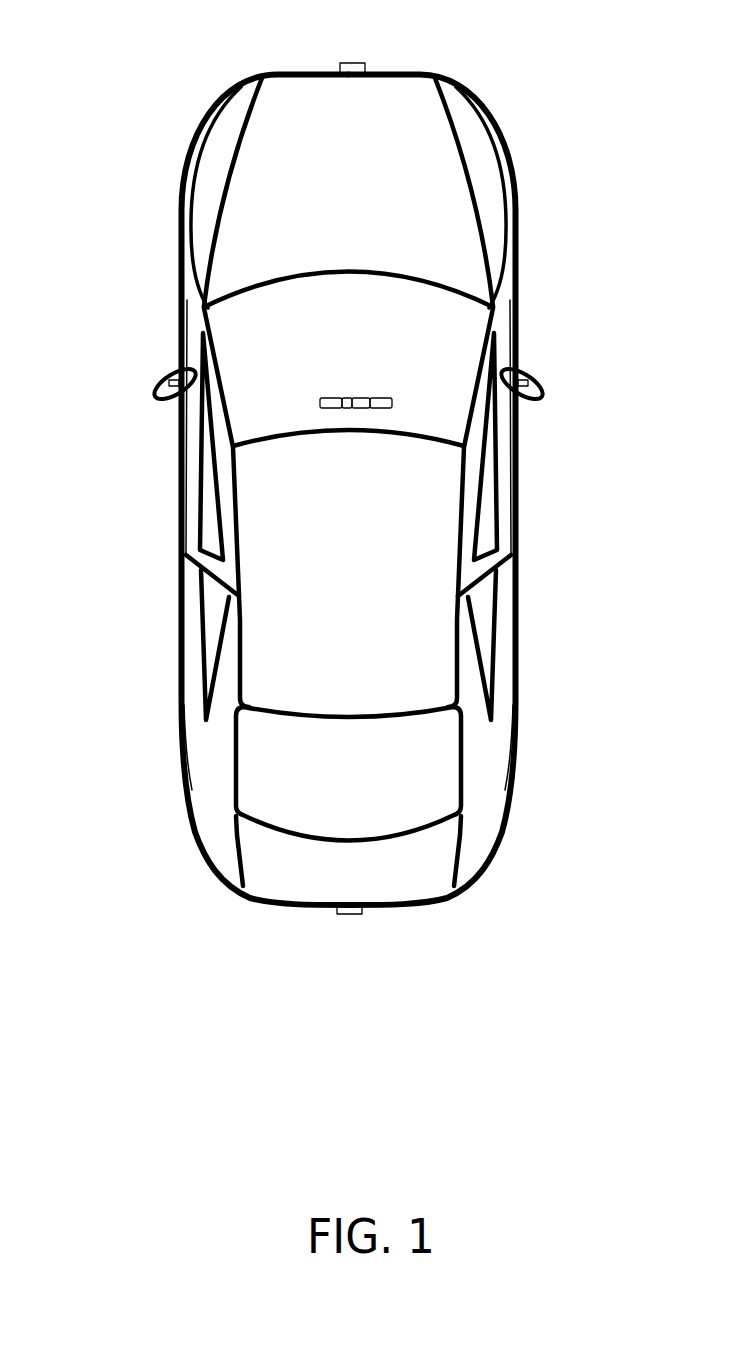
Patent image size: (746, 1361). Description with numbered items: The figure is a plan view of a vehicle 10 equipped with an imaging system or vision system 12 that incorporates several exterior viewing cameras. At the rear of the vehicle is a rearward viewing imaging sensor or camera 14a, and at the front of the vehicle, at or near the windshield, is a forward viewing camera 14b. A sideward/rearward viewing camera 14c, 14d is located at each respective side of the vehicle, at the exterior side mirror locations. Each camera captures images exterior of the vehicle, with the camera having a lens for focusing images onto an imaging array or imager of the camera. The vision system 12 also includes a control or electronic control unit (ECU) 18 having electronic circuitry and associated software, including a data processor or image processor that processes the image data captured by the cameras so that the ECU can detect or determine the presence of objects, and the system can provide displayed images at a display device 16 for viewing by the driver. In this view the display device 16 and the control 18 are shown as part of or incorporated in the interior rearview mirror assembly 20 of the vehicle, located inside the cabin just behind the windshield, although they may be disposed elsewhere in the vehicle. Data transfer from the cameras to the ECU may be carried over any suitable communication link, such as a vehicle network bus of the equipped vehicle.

The vehicle 10 is at (316, 500).
The vision system 12 is at (311, 923).
The rearward viewing camera 14a is at (357, 914).
The forward viewing camera 14b is at (358, 63).
The sideward/rearward viewing camera 14c is at (167, 380).
The sideward/rearward viewing camera 14d is at (530, 380).
The display device 16 is at (333, 399).
The electronic control unit 18 is at (352, 397).
The interior rearview mirror assembly 20 is at (393, 398).